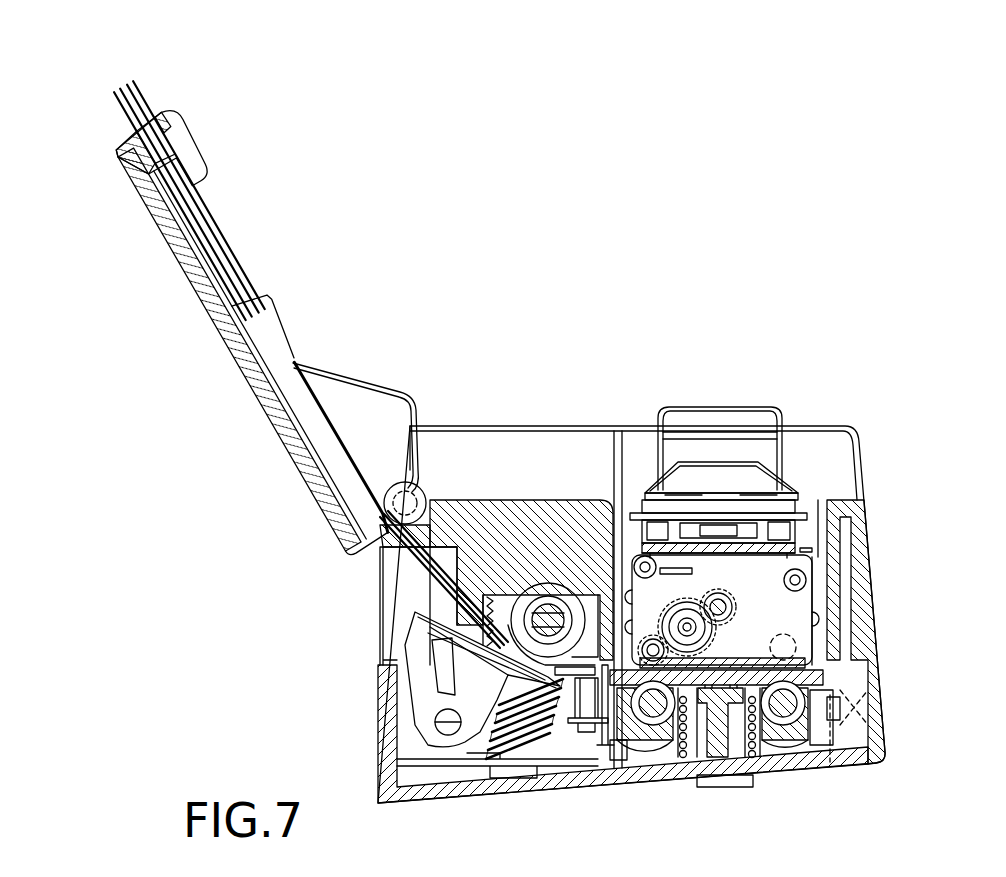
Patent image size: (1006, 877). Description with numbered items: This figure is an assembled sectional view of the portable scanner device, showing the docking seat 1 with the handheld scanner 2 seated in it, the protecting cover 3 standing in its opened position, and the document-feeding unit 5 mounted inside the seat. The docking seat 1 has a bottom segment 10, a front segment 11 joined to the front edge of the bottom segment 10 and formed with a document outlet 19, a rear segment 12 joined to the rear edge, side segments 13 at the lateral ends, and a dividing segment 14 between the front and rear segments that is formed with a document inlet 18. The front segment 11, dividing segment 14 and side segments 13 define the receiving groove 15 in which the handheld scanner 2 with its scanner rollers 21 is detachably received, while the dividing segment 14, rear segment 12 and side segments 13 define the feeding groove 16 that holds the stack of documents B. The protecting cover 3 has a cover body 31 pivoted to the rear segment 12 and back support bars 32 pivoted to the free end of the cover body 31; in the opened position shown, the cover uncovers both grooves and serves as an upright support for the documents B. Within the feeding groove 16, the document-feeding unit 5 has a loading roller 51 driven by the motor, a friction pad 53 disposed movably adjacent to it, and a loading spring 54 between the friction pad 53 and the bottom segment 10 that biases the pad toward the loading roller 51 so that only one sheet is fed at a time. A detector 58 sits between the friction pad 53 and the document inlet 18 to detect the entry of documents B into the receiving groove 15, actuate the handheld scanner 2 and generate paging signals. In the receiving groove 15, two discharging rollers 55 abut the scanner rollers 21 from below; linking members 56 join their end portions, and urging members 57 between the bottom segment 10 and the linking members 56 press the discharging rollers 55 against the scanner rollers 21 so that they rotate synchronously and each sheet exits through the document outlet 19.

The docking seat 1 is at (900, 723).
The handheld scanner 2 is at (717, 402).
The protecting cover 3 is at (213, 329).
The document-feeding unit 5 is at (417, 755).
The bottom segment 10 is at (833, 762).
The front segment 11 is at (873, 573).
The rear segment 12 is at (383, 708).
The side segments 13 is at (579, 431).
The dividing segment 14 is at (613, 617).
The receiving groove 15 is at (818, 553).
The feeding groove 16 is at (460, 570).
The document inlet 18 is at (603, 747).
The document outlet 19 is at (860, 704).
The scanner rollers 21 is at (663, 640).
The cover body 31 is at (217, 317).
The back support bars 32 is at (130, 113).
The documents B is at (222, 244).
The loading roller 51 is at (550, 612).
The friction pad 53 is at (517, 660).
The loading spring 54 is at (513, 742).
The discharging rollers 55 is at (655, 740).
The linking members 56 is at (673, 727).
The urging members 57 is at (748, 730).
The detector 58 is at (587, 703).